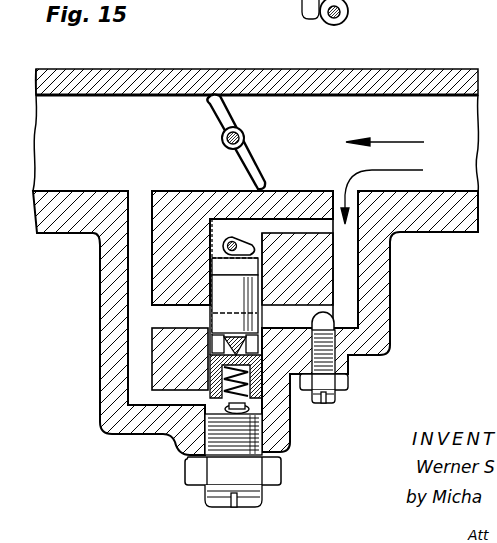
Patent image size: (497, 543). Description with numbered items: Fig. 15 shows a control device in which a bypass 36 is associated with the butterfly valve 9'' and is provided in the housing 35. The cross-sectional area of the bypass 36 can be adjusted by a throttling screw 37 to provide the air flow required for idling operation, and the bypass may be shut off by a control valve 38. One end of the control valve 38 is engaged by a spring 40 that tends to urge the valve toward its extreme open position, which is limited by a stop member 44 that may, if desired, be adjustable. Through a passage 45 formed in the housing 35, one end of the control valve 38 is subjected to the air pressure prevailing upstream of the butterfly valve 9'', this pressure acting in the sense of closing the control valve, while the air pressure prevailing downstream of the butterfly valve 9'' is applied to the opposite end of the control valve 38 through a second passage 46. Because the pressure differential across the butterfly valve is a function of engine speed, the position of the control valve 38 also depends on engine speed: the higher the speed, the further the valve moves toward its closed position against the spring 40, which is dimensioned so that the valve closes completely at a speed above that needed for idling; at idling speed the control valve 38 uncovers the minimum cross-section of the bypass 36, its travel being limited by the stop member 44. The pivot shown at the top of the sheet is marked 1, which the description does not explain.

The housing 35 is at (230, 87).
The butterfly valve 9'' is at (222, 141).
The pivot 1 is at (347, 10).
The bypass 36 is at (162, 315).
The second passage 46 is at (140, 372).
The passage 45 is at (300, 225).
The stop member 44 is at (250, 248).
The control valve 38 is at (245, 290).
The spring 40 is at (244, 406).
The throttling screw 37 is at (333, 404).